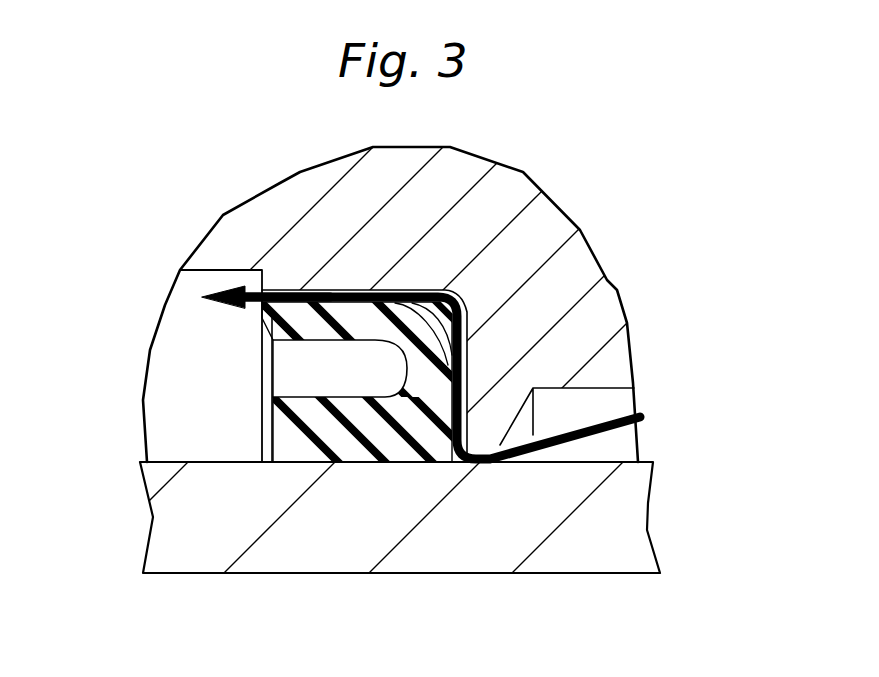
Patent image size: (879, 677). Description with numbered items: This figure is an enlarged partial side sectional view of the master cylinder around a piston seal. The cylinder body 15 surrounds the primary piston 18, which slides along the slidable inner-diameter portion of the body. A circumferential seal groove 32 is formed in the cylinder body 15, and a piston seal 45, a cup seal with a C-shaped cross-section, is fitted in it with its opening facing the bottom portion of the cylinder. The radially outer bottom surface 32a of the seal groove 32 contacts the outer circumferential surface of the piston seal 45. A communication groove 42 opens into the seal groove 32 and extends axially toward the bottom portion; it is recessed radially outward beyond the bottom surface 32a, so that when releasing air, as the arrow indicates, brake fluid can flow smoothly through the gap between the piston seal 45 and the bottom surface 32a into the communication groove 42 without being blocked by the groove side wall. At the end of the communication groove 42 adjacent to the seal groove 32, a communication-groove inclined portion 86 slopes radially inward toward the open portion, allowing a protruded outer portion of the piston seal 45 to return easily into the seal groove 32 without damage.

The cylinder body 15 is at (542, 180).
The communication groove 42 is at (232, 271).
The primary piston 18 is at (617, 515).
The piston seal 45 is at (380, 452).
The bottom surface of circumferential seal groove 32a is at (343, 290).
The circumferential seal groove 32 is at (451, 302).
The communication-groove inclined portion 86 is at (243, 302).